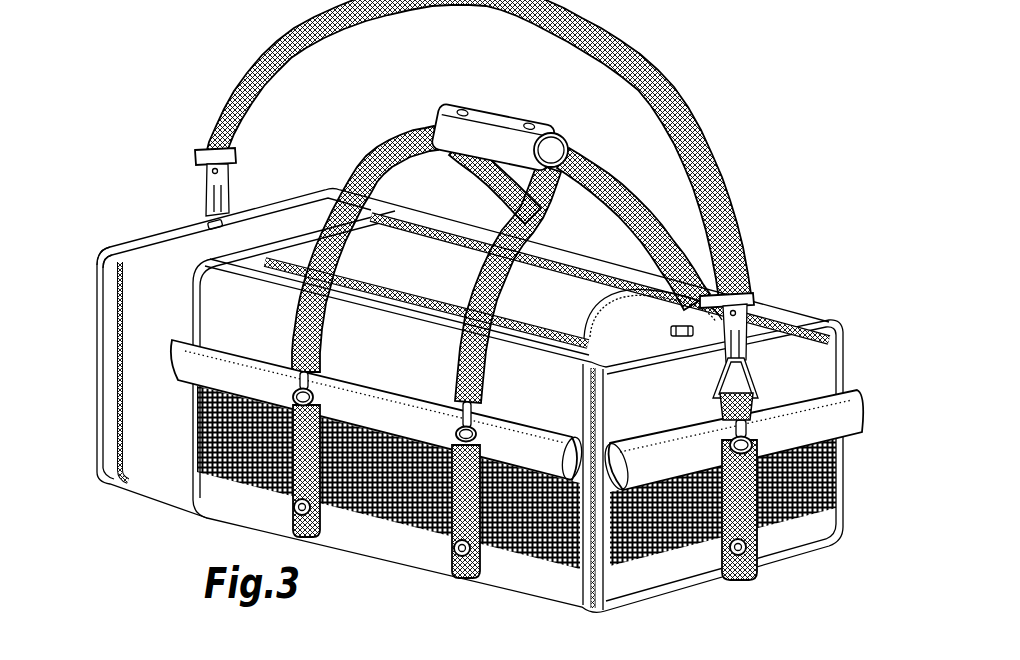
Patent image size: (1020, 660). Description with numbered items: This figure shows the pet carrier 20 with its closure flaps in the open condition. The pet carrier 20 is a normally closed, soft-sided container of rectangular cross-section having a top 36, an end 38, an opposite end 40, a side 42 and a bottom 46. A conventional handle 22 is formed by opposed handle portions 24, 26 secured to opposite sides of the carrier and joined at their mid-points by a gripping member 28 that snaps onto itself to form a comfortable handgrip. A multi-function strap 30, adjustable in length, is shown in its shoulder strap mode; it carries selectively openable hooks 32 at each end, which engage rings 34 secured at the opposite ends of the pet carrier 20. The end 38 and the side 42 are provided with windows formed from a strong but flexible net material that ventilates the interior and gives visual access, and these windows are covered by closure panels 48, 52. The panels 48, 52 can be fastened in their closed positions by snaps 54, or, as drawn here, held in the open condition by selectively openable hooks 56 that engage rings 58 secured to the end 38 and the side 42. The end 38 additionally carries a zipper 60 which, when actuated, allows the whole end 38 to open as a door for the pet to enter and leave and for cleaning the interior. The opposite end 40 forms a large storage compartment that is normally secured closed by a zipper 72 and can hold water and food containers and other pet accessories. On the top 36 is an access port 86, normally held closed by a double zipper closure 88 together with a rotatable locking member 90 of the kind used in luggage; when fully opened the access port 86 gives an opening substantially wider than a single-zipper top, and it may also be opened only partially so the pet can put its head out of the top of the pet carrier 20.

The pet carrier 20 is at (152, 224).
The handle 22 is at (352, 170).
The handle portion 24 is at (400, 130).
The handle portion 26 is at (618, 180).
The gripping member 28 is at (503, 112).
The multi-function strap 30 is at (240, 72).
The selectively openable hook 32 is at (230, 183).
The ring 34 is at (752, 370).
The top 36 is at (518, 349).
The end 38 is at (815, 528).
The end 40 is at (126, 360).
The side 42 is at (205, 473).
The bottom 46 is at (362, 506).
The closure panel 48 is at (656, 458).
The closure panel 52 is at (180, 365).
The snap 54 is at (294, 510).
The selectively openable hook 56 is at (297, 383).
The ring 58 is at (353, 373).
The zipper 60 is at (593, 418).
The zipper 72 is at (123, 285).
The access port 86 is at (585, 282).
The double zipper closure 88 is at (587, 307).
The rotatable locking member 90 is at (682, 335).